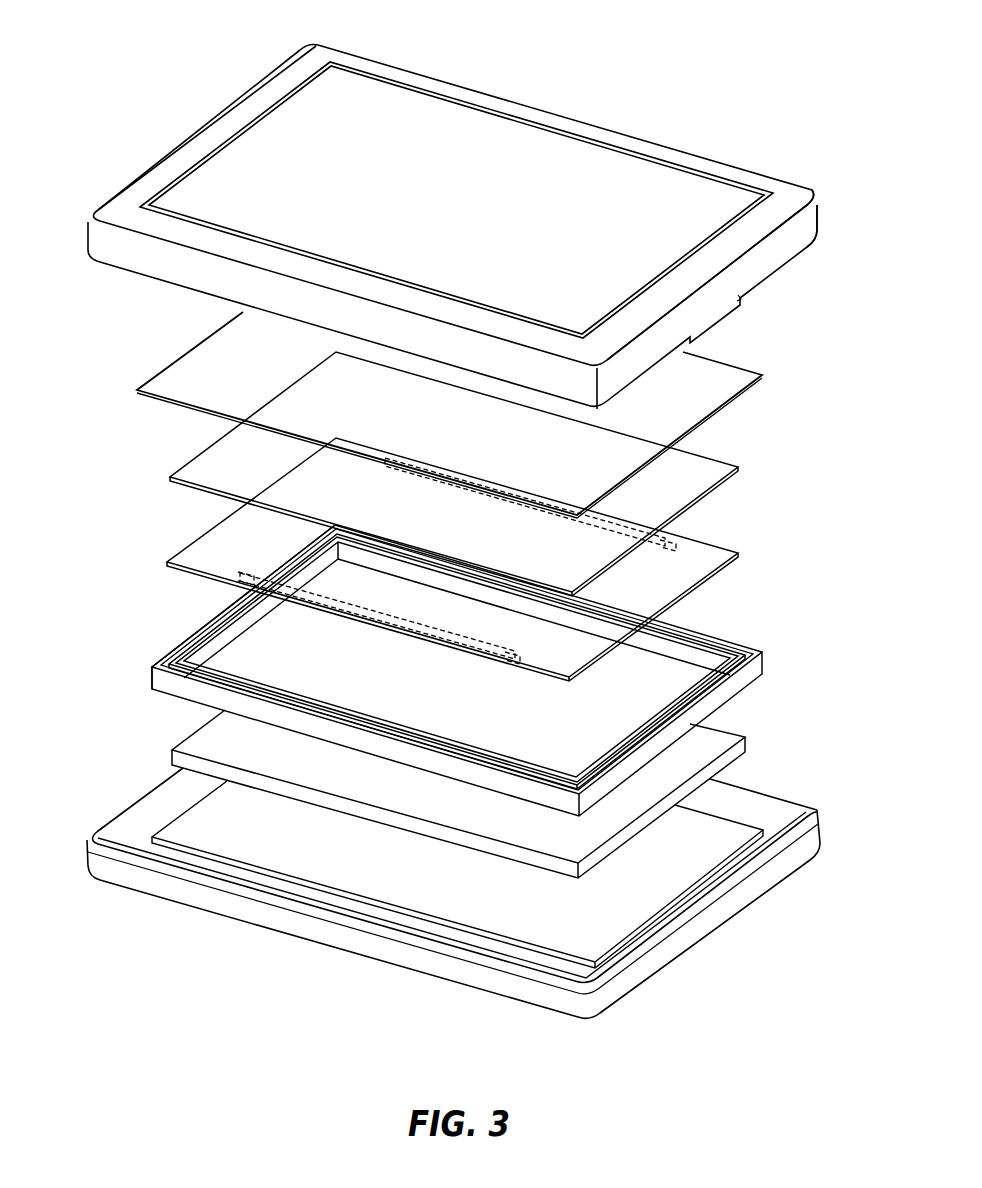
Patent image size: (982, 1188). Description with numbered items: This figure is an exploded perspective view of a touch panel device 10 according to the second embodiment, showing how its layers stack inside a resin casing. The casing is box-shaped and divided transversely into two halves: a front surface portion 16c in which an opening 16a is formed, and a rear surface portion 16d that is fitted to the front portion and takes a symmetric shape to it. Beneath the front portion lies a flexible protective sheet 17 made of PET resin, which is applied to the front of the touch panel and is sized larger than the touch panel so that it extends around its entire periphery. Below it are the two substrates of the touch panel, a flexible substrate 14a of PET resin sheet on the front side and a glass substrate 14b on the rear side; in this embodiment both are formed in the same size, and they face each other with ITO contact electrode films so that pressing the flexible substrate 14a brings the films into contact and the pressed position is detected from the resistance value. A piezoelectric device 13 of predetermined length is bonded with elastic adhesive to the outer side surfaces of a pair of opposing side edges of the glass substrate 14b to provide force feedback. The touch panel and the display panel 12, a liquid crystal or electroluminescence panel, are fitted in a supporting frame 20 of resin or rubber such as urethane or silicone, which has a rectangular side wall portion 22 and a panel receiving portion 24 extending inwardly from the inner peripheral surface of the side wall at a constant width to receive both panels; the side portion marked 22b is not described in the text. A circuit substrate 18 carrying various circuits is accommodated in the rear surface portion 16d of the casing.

The touch panel device 10 is at (586, 86).
The display panel 12 is at (725, 736).
The piezoelectric device 13 is at (668, 542).
The flexible substrate 14a is at (205, 470).
The glass substrate 14b is at (205, 557).
The opening 16a is at (253, 230).
The front surface portion 16c is at (793, 198).
The rear surface portion 16d is at (482, 890).
The flexible protective sheet 17 is at (730, 370).
The circuit substrate 18 is at (257, 843).
The supporting frame 20 is at (454, 670).
The side wall portion 22 is at (757, 668).
The frame side portion 22b is at (183, 637).
The panel receiving portion 24 is at (680, 655).